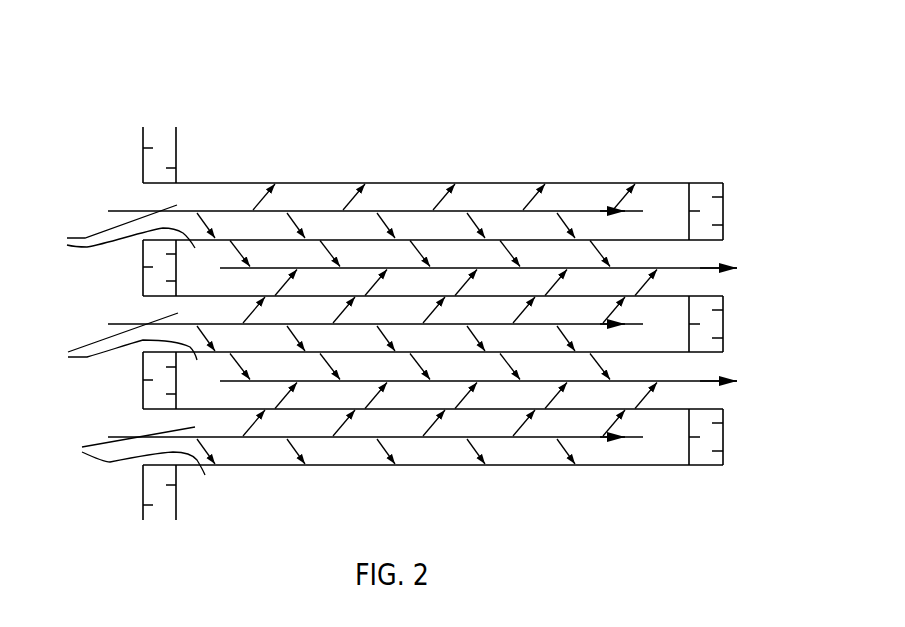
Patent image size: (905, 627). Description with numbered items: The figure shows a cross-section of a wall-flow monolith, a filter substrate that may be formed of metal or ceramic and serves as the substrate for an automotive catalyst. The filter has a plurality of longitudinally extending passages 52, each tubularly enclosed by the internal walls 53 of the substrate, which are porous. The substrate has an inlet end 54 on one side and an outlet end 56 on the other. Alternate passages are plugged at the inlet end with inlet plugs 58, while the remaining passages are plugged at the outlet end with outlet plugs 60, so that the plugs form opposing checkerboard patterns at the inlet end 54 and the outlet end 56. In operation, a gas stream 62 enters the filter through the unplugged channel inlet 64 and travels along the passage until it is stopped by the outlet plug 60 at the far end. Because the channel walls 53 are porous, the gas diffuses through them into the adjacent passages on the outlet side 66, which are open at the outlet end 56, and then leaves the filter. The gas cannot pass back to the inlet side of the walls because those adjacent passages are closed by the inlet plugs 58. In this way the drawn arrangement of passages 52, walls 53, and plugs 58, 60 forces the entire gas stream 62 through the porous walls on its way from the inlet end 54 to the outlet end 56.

The longitudinally extending passages 52 is at (123, 340).
The internal walls 53 is at (428, 240).
The inlet end 54 is at (105, 100).
The outlet end 56 is at (770, 156).
The inlet plugs 58 is at (150, 162).
The outlet plugs 60 is at (720, 213).
The gas stream 62 is at (233, 213).
The channel inlet 64 is at (162, 205).
The outlet side 66 is at (717, 291).